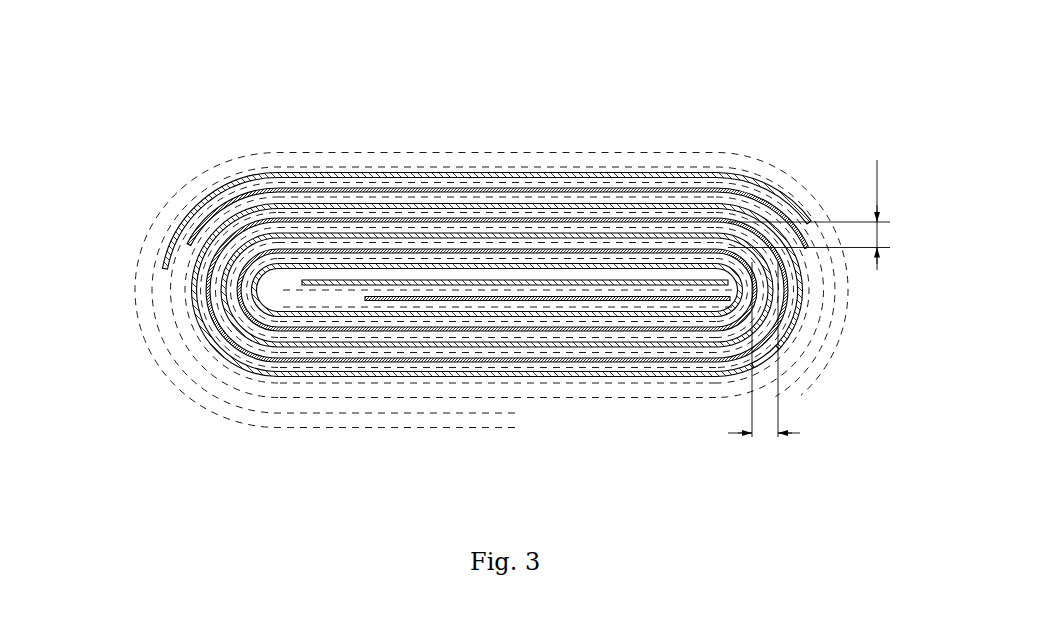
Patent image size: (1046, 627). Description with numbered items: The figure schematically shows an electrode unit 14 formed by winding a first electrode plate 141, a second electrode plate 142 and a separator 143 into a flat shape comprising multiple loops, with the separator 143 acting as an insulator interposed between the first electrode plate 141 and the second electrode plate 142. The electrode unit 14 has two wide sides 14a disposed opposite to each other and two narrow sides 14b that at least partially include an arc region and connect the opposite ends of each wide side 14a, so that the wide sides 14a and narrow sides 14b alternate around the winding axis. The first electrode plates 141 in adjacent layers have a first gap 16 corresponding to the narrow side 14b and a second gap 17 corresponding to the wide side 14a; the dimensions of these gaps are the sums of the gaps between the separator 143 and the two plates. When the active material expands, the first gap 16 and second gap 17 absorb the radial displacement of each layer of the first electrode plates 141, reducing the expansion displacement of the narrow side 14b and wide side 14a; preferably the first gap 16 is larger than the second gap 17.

The electrode unit 14 is at (552, 26).
The wide side 14a is at (542, 107).
The narrow side 14b is at (118, 333).
The first electrode plate 141 is at (363, 300).
The second electrode plate 142 is at (327, 285).
The separator 143 is at (280, 292).
The first gap 16 is at (773, 437).
The second gap 17 is at (880, 227).